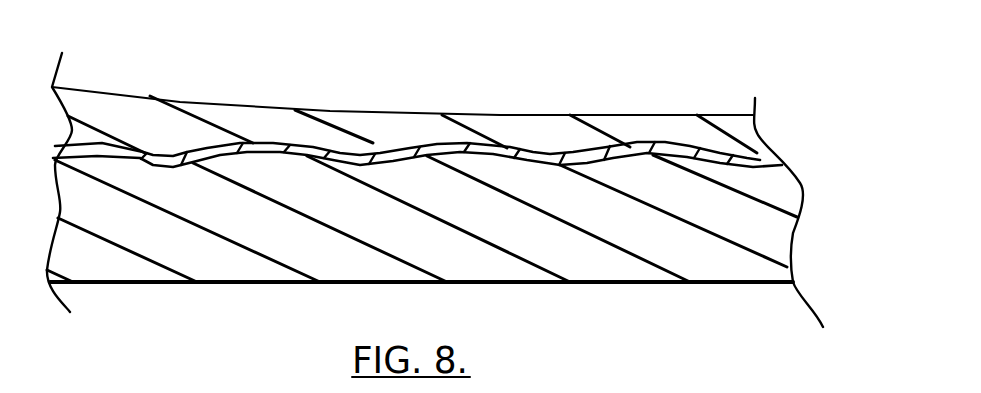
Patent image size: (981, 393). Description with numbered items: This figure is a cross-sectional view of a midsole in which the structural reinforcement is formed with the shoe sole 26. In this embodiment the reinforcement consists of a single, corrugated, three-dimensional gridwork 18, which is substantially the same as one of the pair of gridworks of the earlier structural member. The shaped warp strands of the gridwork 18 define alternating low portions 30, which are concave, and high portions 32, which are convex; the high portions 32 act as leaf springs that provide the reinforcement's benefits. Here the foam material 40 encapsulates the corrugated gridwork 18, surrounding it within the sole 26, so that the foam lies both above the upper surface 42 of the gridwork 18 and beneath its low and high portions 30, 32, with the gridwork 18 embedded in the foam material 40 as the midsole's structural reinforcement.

The corrugated three-dimensional gridwork 18 is at (713, 147).
The shoe sole 26 is at (600, 70).
The low portions 30 is at (365, 163).
The high portions 32 is at (287, 143).
The foam material 40 is at (760, 215).
The upper surface 42 is at (102, 147).